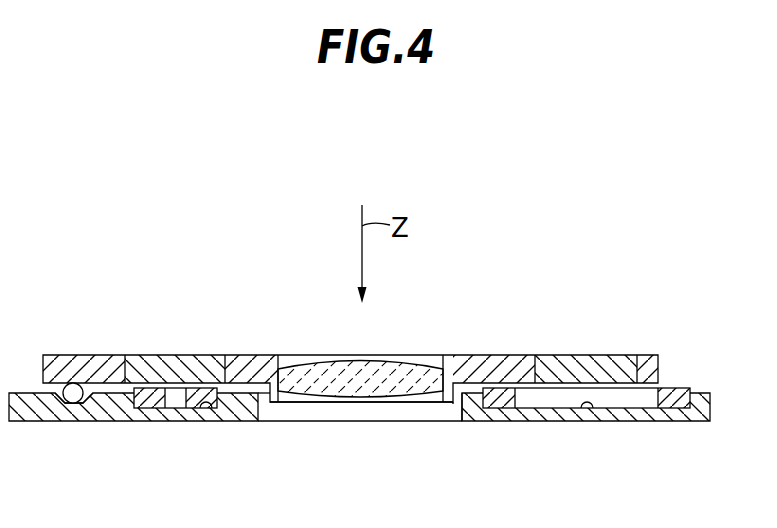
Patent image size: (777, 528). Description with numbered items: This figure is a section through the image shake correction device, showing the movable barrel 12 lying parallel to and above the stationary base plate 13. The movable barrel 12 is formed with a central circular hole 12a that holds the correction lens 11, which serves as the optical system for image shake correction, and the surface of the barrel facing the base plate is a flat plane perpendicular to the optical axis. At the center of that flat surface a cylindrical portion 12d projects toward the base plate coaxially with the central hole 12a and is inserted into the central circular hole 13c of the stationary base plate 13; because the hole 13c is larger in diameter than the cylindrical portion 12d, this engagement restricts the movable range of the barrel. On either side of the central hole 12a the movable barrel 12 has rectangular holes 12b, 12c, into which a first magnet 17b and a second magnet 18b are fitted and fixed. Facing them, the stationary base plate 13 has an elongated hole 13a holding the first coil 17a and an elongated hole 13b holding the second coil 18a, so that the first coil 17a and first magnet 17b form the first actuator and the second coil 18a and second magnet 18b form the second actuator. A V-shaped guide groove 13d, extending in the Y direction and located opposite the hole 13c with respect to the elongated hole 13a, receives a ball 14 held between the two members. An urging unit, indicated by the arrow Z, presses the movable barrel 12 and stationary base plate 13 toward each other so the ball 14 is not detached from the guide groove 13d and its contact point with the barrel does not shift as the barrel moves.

The correction lens 11 is at (312, 372).
The movable barrel 12 is at (473, 365).
The central circular hole 12a is at (431, 353).
The rectangular hole 12b is at (226, 372).
The rectangular hole 12c is at (548, 367).
The cylindrical portion 12d is at (453, 403).
The stationary base plate 13 is at (247, 417).
The elongated hole 13a is at (176, 435).
The elongated hole 13b is at (593, 435).
The central circular hole 13c is at (462, 405).
The guide groove 13d is at (64, 395).
The ball 14 is at (72, 385).
The first coil 17a is at (143, 404).
The first magnet 17b is at (178, 360).
The second coil 18a is at (681, 392).
The second magnet 18b is at (622, 366).